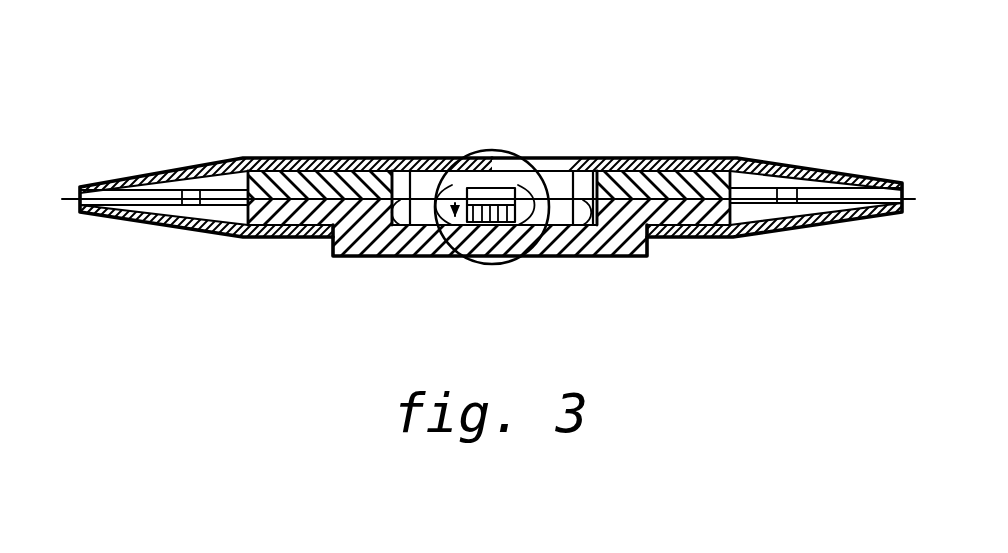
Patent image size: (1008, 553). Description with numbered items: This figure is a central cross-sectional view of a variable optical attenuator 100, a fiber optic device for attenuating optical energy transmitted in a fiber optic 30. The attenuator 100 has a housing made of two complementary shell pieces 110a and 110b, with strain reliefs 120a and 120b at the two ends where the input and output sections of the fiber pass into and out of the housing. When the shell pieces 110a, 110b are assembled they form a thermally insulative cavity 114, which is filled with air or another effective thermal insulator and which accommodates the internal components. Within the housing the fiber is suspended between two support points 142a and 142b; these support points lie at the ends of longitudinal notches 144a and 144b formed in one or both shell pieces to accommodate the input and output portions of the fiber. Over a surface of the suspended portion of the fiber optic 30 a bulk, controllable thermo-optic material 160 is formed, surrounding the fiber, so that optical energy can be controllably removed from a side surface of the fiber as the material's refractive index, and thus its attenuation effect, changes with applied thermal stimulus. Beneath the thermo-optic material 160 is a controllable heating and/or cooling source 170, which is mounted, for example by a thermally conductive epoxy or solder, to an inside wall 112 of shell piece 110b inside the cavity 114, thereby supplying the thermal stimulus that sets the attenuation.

The fiber optic 30 is at (63, 198).
The variable optical attenuator 100 is at (636, 110).
The shell piece 110a is at (360, 157).
The shell piece 110b is at (363, 257).
The inside wall 112 is at (452, 240).
The thermally insulative cavity 114 is at (425, 180).
The strain relief 120a is at (201, 166).
The strain relief 120b is at (792, 166).
The support point 142a is at (412, 238).
The support point 142b is at (558, 237).
The longitudinal notch 144a is at (263, 237).
The longitudinal notch 144b is at (686, 237).
The thermo-optic material 160 is at (525, 152).
The heating/cooling source 170 is at (527, 242).